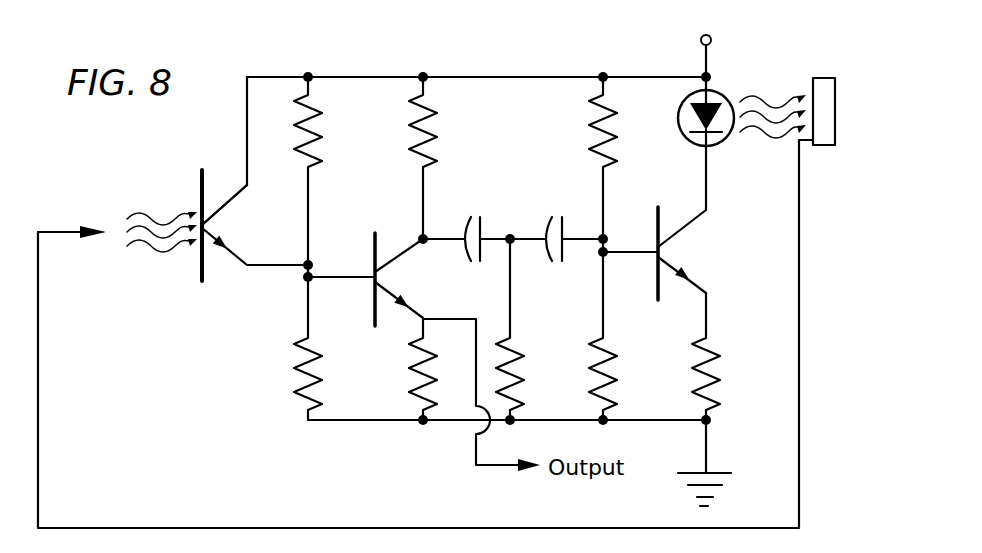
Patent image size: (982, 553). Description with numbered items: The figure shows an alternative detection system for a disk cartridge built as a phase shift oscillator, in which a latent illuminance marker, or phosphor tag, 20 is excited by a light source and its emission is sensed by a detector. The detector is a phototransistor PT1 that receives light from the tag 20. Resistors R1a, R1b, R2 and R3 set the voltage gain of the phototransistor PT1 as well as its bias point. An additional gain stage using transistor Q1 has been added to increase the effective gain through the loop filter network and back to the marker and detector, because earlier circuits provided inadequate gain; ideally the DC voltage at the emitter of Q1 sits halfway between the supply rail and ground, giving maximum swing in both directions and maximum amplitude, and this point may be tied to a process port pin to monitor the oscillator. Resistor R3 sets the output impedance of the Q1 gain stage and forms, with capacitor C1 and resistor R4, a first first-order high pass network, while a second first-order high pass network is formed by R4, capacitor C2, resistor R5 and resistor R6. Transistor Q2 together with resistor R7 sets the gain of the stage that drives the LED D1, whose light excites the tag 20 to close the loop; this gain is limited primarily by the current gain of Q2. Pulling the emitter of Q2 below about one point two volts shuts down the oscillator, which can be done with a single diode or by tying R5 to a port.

The phototransistor PT1 is at (217, 214).
The resistor R1a is at (331, 131).
The resistor R1b is at (332, 371).
The resistor R2 is at (438, 371).
The resistor R3 is at (437, 131).
The resistor R4 is at (527, 371).
The resistor R5 is at (619, 131).
The resistor R6 is at (620, 371).
The resistor R7 is at (720, 371).
The capacitor C1 is at (466, 229).
The capacitor C2 is at (556, 229).
The transistor Q1 is at (365, 266).
The transistor Q2 is at (654, 240).
The LED D1 is at (742, 132).
The latent illuminance marker 20 is at (835, 93).